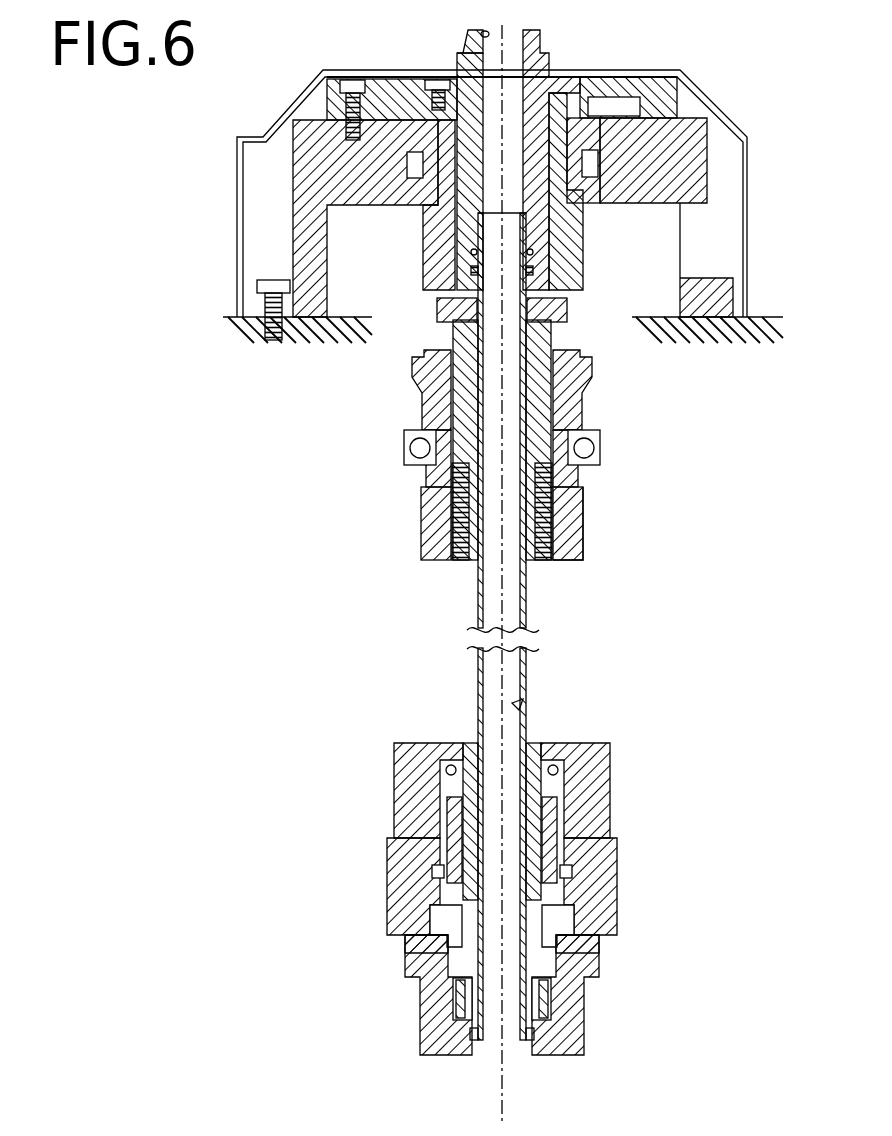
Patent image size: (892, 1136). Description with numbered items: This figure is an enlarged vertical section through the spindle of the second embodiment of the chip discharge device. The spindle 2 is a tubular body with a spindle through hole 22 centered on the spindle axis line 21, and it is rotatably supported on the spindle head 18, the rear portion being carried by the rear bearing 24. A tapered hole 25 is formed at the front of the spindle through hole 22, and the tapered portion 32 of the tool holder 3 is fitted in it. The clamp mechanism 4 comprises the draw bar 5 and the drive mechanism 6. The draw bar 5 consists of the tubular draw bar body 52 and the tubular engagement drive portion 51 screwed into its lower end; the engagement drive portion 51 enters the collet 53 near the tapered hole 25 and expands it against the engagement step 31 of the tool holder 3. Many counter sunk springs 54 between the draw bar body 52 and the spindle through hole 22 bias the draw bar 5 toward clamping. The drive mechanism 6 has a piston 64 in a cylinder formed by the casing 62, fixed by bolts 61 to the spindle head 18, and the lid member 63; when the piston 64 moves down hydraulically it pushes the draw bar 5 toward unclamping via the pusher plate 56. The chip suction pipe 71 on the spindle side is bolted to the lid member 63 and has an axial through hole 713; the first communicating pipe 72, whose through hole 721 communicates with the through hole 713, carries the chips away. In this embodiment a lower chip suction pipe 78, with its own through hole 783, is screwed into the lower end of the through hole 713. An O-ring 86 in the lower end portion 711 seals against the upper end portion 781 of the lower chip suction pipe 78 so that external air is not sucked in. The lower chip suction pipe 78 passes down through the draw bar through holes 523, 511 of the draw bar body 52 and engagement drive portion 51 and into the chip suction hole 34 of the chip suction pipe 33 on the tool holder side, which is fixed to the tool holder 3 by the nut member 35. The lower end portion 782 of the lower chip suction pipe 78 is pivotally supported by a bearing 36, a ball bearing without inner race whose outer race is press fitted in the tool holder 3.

The drive mechanism 6 is at (714, 79).
The through hole 721 is at (465, 32).
The first communicating pipe 72 is at (457, 63).
The chip suction pipe on the spindle side 71 is at (568, 78).
The through hole 713 is at (520, 112).
The lid member 63 is at (656, 78).
The piston 64 is at (440, 229).
The casing 62 is at (317, 254).
The bolts 61 is at (270, 281).
The spindle head 18 is at (357, 317).
The lower end portion 711 is at (530, 223).
The O-ring 86 is at (534, 252).
The upper end portion 781 is at (530, 271).
The pusher plate 56 is at (567, 309).
The draw bar 5 is at (556, 337).
The draw bar body 52 is at (565, 386).
The spindle through hole 22 is at (560, 420).
The rear bearing 24 is at (600, 454).
The counter sunk springs 54 is at (560, 496).
The clamp mechanism 4 is at (590, 525).
The draw bar through hole 523 is at (542, 554).
The lower chip suction pipe 78 is at (524, 614).
The spindle axis line 21 is at (503, 673).
The through hole 783 is at (524, 708).
The spindle 2 is at (394, 782).
The draw bar through hole 511 is at (528, 807).
The engagement drive portion 51 is at (545, 840).
The collet 53 is at (560, 867).
The engagement step 31 is at (582, 899).
The tapered hole 25 is at (576, 924).
The tapered portion 32 is at (432, 915).
The chip suction hole 34 is at (470, 954).
The chip suction pipe on the tool holder side 33 is at (536, 964).
The nut member 35 is at (552, 994).
The tool holder 3 is at (578, 1016).
The lower end portion 782 is at (479, 1041).
The bearing 36 is at (531, 1041).